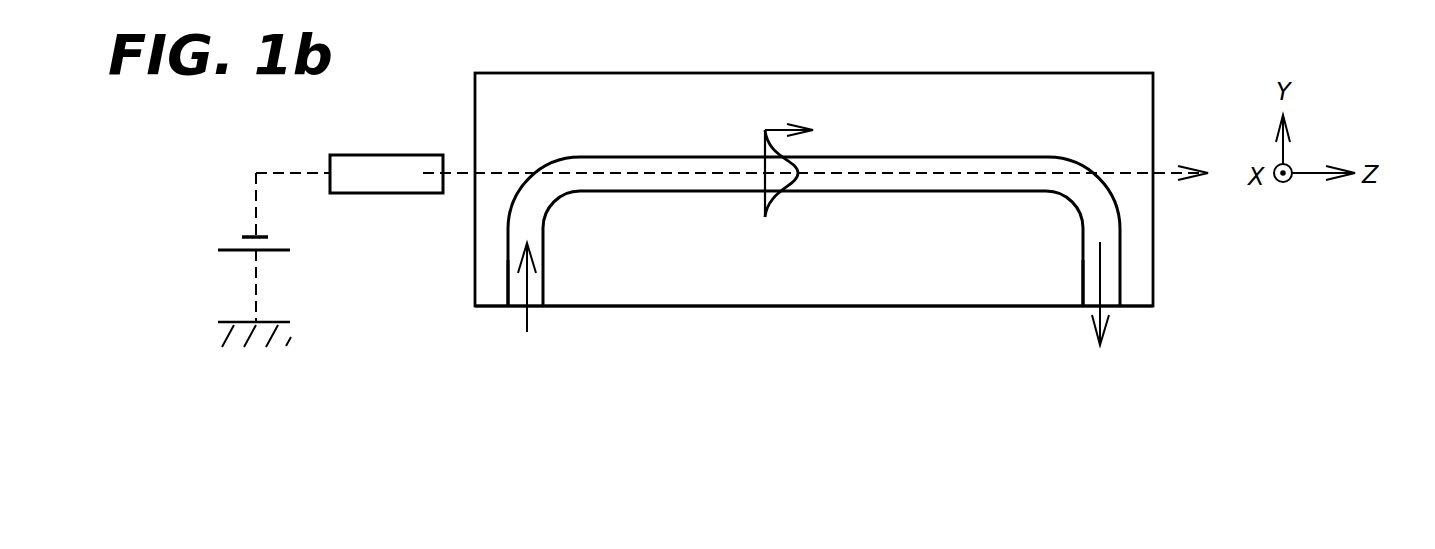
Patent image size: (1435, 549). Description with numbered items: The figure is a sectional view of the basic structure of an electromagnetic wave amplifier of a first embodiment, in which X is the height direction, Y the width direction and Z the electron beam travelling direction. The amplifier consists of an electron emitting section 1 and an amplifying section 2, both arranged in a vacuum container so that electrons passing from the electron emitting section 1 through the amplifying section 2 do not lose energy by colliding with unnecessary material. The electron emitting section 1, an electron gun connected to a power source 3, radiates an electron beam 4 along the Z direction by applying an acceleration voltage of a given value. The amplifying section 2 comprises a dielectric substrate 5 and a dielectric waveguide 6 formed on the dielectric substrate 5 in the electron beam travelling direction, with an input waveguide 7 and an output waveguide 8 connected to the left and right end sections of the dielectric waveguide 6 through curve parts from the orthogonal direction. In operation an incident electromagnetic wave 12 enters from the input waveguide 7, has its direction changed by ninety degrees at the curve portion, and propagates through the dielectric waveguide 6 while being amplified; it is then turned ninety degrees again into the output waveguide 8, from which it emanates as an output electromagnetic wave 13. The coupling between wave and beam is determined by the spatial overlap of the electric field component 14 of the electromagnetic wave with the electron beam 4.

The electron emitting section 1 is at (386, 155).
The amplifying section 2 is at (692, 317).
The power source 3 is at (240, 244).
The electron beam 4 is at (462, 172).
The dielectric substrate 5 is at (757, 309).
The dielectric waveguide 6 is at (1002, 163).
The input waveguide 7 is at (508, 278).
The output waveguide 8 is at (1083, 262).
The incident electromagnetic wave 12 is at (528, 313).
The output electromagnetic wave 13 is at (1100, 277).
The electric field component 14 is at (765, 143).